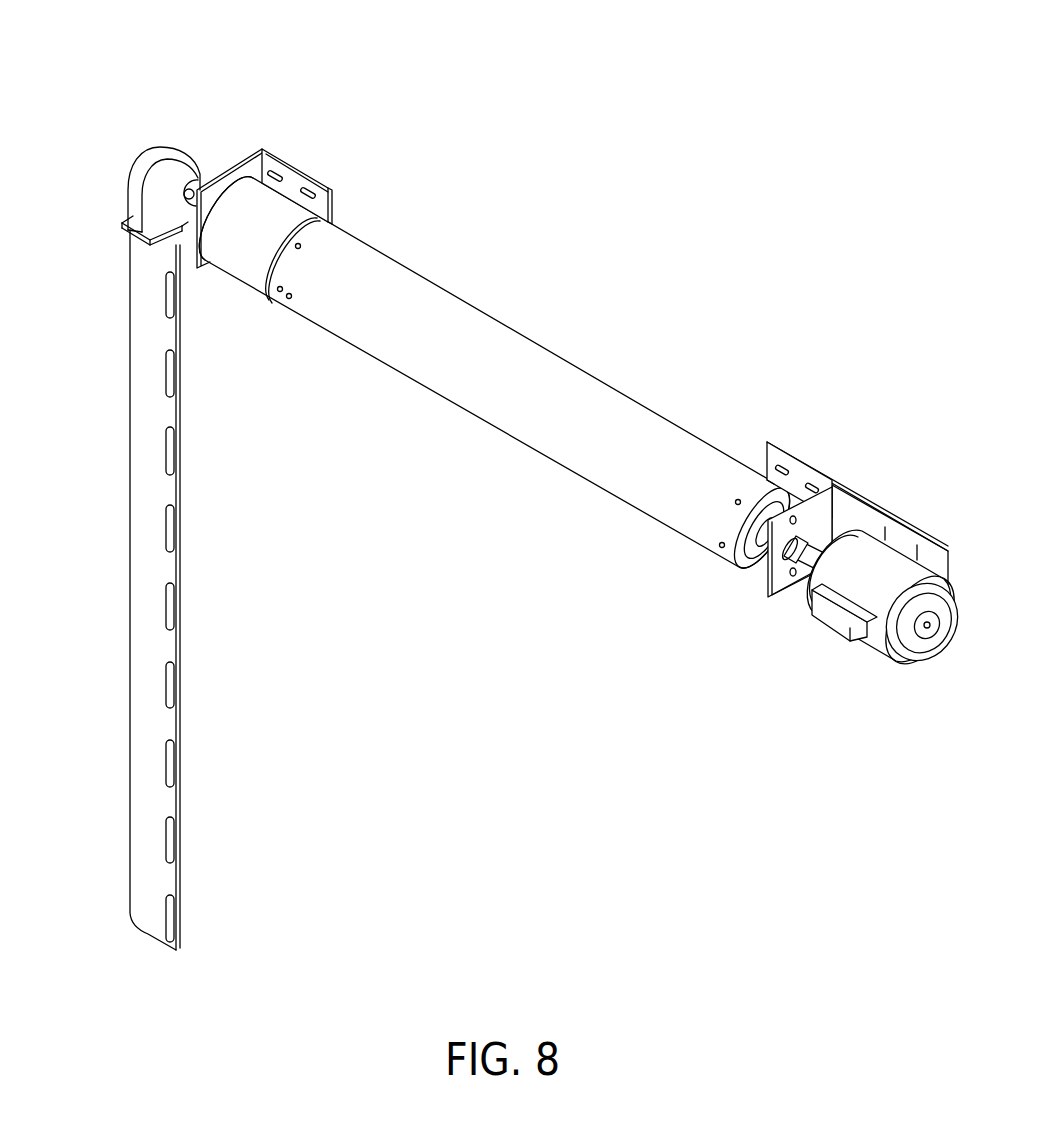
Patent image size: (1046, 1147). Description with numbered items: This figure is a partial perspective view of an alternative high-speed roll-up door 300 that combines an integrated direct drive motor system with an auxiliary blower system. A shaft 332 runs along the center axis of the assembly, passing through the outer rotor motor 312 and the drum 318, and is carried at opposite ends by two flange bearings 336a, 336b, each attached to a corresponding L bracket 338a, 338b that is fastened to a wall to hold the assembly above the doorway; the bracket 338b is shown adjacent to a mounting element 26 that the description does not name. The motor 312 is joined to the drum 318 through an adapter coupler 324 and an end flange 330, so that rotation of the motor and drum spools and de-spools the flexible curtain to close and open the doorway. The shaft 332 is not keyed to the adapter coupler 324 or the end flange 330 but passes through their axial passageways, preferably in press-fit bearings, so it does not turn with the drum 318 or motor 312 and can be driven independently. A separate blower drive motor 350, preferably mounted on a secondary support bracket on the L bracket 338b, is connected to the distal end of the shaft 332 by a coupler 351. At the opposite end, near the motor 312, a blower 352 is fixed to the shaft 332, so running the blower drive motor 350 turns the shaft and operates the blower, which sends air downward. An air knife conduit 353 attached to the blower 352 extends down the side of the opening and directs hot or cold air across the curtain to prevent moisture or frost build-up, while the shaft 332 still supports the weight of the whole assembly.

The high-speed roll-up door 300 is at (703, 158).
The outer rotor motor 312 is at (273, 220).
The drum 318 is at (540, 355).
The adapter coupler 324 is at (322, 227).
The mounting bracket rail 26 is at (850, 516).
The end flange 330 is at (780, 492).
The shaft 332 is at (172, 150).
The flange bearing 336a is at (143, 238).
The flange bearing 336b is at (757, 573).
The L bracket 338a is at (261, 148).
The L bracket 338b is at (768, 442).
The blower drive motor 350 is at (893, 672).
The coupler 351 is at (808, 582).
The blower 352 is at (133, 183).
The air knife conduit 353 is at (147, 762).